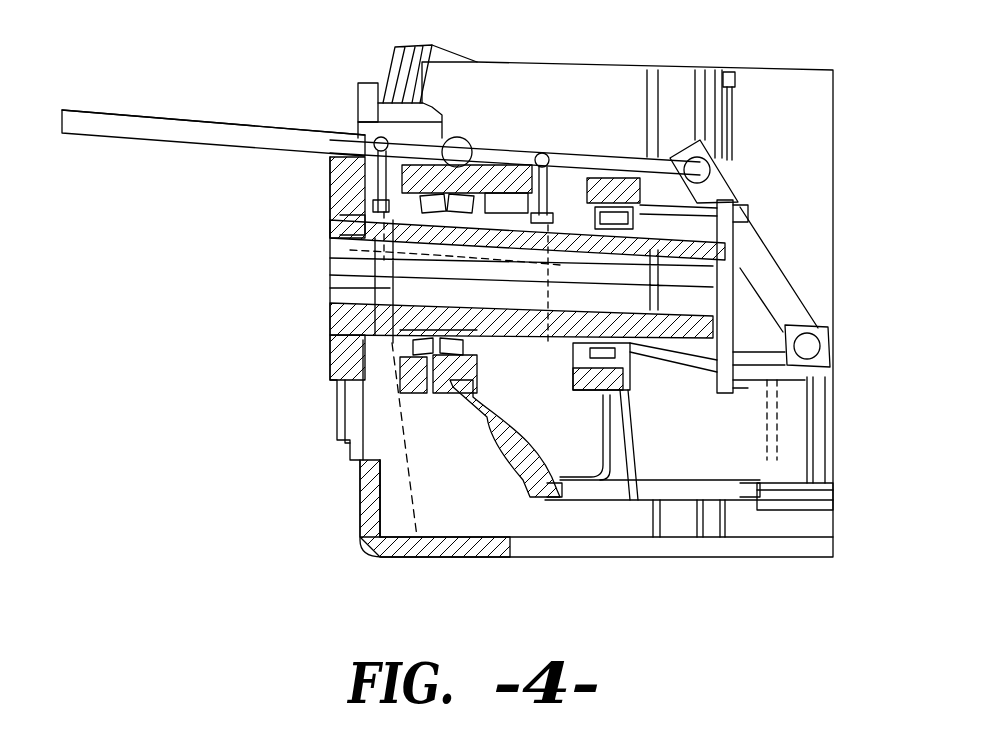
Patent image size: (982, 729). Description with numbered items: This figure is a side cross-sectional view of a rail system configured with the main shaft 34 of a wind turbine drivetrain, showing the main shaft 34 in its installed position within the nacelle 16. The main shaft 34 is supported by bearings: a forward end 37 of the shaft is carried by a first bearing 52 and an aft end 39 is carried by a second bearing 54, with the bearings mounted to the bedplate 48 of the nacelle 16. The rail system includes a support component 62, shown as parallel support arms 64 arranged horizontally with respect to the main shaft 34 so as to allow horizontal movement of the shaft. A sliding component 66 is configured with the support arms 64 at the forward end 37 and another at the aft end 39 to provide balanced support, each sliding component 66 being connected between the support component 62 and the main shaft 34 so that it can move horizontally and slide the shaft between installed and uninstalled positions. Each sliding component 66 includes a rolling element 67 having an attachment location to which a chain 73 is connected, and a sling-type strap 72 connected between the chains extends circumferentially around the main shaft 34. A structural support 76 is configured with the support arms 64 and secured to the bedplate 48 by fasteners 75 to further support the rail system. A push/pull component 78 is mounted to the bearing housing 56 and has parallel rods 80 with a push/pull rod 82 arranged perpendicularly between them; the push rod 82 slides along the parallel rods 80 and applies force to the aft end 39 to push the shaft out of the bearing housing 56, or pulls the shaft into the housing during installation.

The nacelle 16 is at (716, 70).
The main shaft 34 is at (323, 337).
The forward end 37 is at (332, 172).
The aft end 39 is at (578, 245).
The bedplate 48 is at (520, 468).
The first bearing 52 is at (453, 392).
The second bearing 54 is at (587, 392).
The bearing housing 56 is at (543, 398).
The support component 62 is at (178, 112).
The parallel support arms 64 is at (130, 111).
The sliding component 66 is at (375, 280).
The rolling element 67 is at (374, 150).
The strap 72 is at (338, 236).
The chain 73 is at (372, 160).
The fasteners 75 is at (704, 172).
The structural support 76 is at (780, 290).
The push/pull component 78 is at (712, 396).
The parallel rods 80 is at (752, 221).
The push/pull rod 82 is at (748, 238).